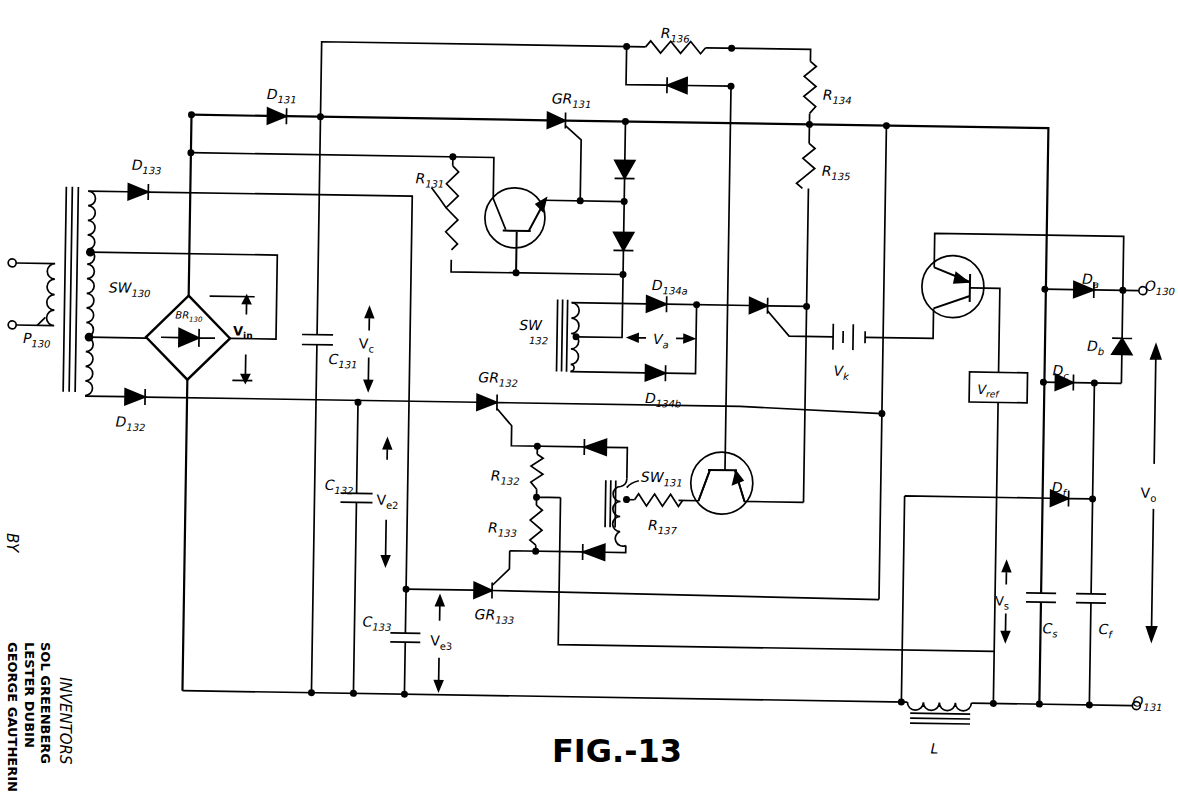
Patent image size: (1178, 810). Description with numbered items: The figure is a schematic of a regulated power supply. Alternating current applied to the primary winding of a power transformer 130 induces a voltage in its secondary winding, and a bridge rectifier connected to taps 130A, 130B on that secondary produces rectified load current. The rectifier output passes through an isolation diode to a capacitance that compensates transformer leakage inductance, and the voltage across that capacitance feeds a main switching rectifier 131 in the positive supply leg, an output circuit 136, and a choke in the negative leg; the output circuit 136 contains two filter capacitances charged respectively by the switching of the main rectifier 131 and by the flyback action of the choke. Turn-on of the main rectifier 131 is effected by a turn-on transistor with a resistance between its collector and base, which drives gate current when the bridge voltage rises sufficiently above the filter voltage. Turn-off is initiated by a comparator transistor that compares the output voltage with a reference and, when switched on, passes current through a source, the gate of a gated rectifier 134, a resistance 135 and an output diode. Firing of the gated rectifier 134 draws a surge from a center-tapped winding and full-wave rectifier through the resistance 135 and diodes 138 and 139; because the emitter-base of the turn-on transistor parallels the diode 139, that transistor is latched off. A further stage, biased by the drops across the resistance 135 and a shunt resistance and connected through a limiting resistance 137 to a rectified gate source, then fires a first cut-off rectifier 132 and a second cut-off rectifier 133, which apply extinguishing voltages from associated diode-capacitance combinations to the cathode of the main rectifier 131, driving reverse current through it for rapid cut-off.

The power transformer 130 is at (51, 278).
The secondary winding tap 130A is at (99, 257).
The secondary winding tap 130B is at (98, 348).
The main switching rectifier 131 is at (519, 221).
The cut-off controlled rectifier 132 is at (732, 482).
The cut-off controlled rectifier 133 is at (966, 286).
The gated rectifier 134 is at (767, 288).
The resistance 135 is at (601, 430).
The output circuit 136 is at (1103, 194).
The limiting resistance 137 is at (682, 101).
The diode 138 is at (644, 173).
The diode 139 is at (643, 245).